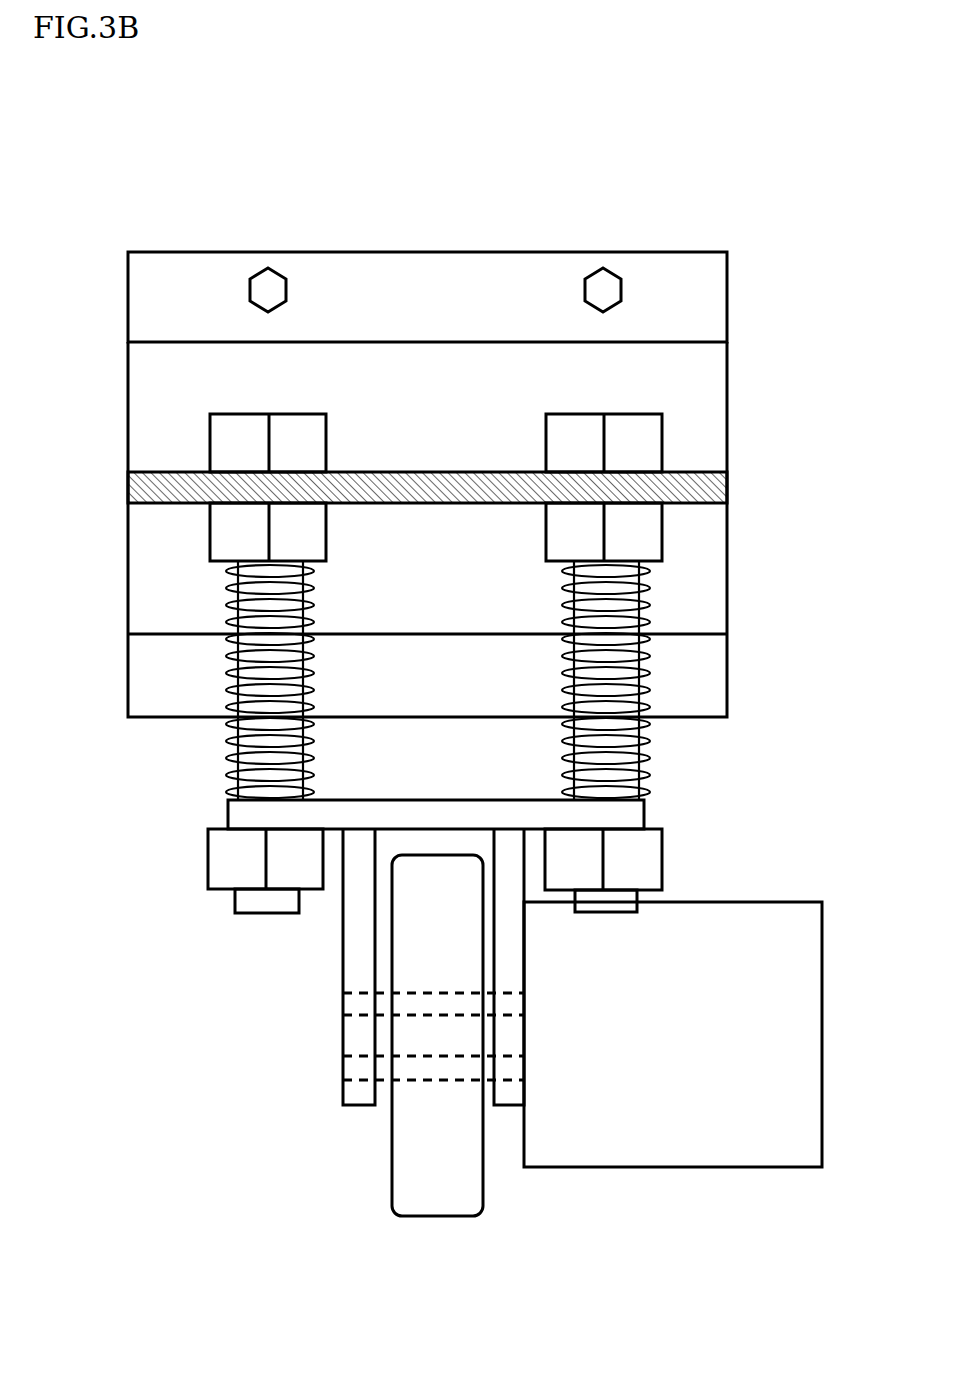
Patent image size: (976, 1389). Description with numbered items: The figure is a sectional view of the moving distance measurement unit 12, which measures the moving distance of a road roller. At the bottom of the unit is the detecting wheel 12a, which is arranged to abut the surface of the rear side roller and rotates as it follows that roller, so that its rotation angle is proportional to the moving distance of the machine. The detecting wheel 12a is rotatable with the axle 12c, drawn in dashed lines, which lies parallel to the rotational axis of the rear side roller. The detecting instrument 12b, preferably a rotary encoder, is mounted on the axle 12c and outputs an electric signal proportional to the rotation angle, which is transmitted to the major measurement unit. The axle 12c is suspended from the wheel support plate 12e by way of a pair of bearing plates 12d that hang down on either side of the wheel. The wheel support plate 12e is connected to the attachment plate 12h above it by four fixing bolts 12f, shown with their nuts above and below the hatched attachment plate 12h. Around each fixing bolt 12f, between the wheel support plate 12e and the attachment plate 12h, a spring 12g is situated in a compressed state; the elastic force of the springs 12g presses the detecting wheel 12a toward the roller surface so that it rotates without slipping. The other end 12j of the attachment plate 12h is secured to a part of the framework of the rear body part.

The moving distance measurement unit 12 is at (289, 224).
The detecting wheel 12a is at (427, 1162).
The detecting instrument 12b is at (673, 1034).
The axle 12c is at (427, 1040).
The bearing plate 12d is at (357, 943).
The wheel support plate 12e is at (457, 815).
The fixing bolt 12f is at (647, 452).
The spring 12g is at (653, 608).
The attachment plate 12h is at (412, 493).
The other end of attachment plate 12j is at (183, 380).